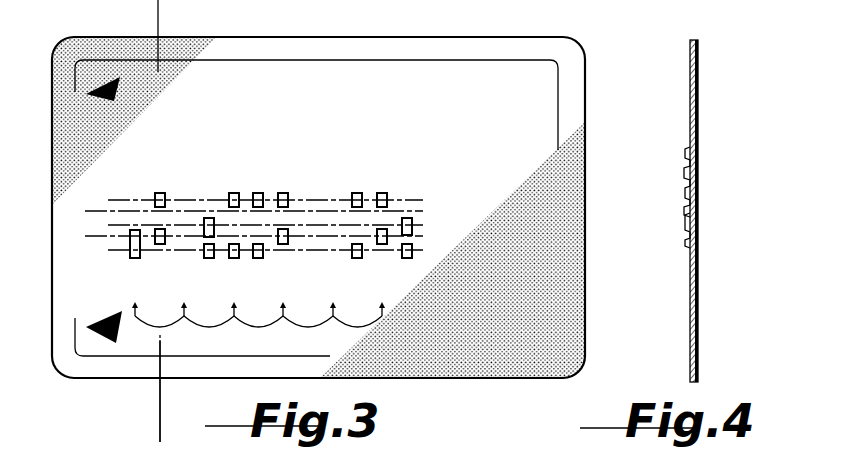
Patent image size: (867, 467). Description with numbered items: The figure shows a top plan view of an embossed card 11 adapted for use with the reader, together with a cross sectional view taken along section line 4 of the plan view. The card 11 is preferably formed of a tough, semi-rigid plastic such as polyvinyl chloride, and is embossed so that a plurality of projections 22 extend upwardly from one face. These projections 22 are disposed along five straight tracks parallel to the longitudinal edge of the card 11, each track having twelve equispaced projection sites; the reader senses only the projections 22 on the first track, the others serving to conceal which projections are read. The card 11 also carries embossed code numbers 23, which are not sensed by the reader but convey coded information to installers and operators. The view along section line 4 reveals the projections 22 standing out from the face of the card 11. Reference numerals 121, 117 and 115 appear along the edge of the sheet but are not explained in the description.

In FIG. 3, the card 11 is at (428, 48).
In FIG. 4, the card 11 is at (700, 99).
In FIG. 3, the embossed account number digits 22 is at (174, 151).
In FIG. 4, the embossed account number digits 22 is at (686, 168).
In FIG. 3, the embossed code digits 23 is at (420, 146).
In FIG. 3, the section line 4- 4 is at (186, 25).
In FIG. 3, the card element 121 is at (157, 462).
In FIG. 3, the card element 117 is at (181, 466).
In FIG. 3, the card element 115 is at (426, 462).